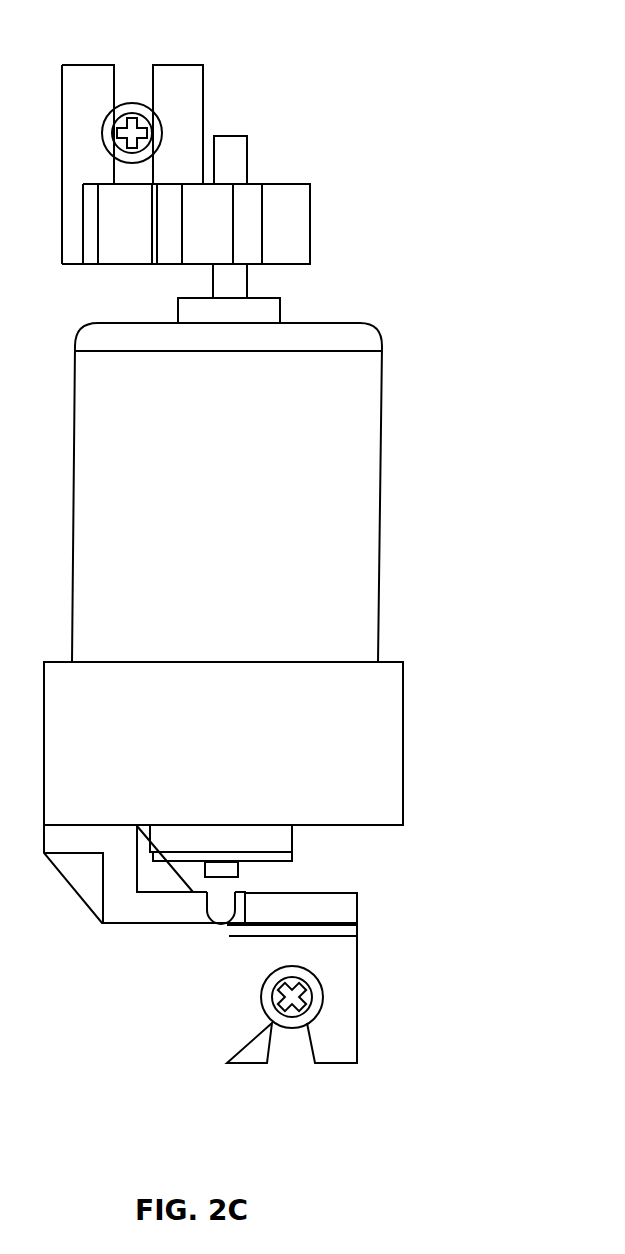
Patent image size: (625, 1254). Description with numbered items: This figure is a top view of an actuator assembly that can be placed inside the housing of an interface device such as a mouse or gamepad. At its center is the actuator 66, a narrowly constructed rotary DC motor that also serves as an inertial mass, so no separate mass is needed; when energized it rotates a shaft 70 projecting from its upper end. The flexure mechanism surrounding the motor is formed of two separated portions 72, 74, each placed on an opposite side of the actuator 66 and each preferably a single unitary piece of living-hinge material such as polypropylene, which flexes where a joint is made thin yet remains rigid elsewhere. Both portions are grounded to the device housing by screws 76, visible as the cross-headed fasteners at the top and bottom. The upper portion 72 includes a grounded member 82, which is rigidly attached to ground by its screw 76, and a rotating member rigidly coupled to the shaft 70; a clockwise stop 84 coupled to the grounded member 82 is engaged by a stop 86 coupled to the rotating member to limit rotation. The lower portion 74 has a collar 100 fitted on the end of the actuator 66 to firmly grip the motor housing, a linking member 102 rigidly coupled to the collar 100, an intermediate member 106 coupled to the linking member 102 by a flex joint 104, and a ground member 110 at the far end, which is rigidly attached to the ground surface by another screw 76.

The actuator 66 is at (353, 505).
The shaft 70 is at (233, 153).
The flexure portion 72 is at (241, 191).
The flexure portion 74 is at (355, 968).
The screw 76 is at (130, 110).
The grounded member 82 is at (188, 92).
The clockwise stop 84 is at (120, 253).
The stop 86 is at (202, 253).
The collar 100 is at (388, 745).
The linking member 102 is at (125, 912).
The flex joint 104 is at (218, 928).
The intermediate member 106 is at (343, 910).
The ground member 110 is at (337, 1007).